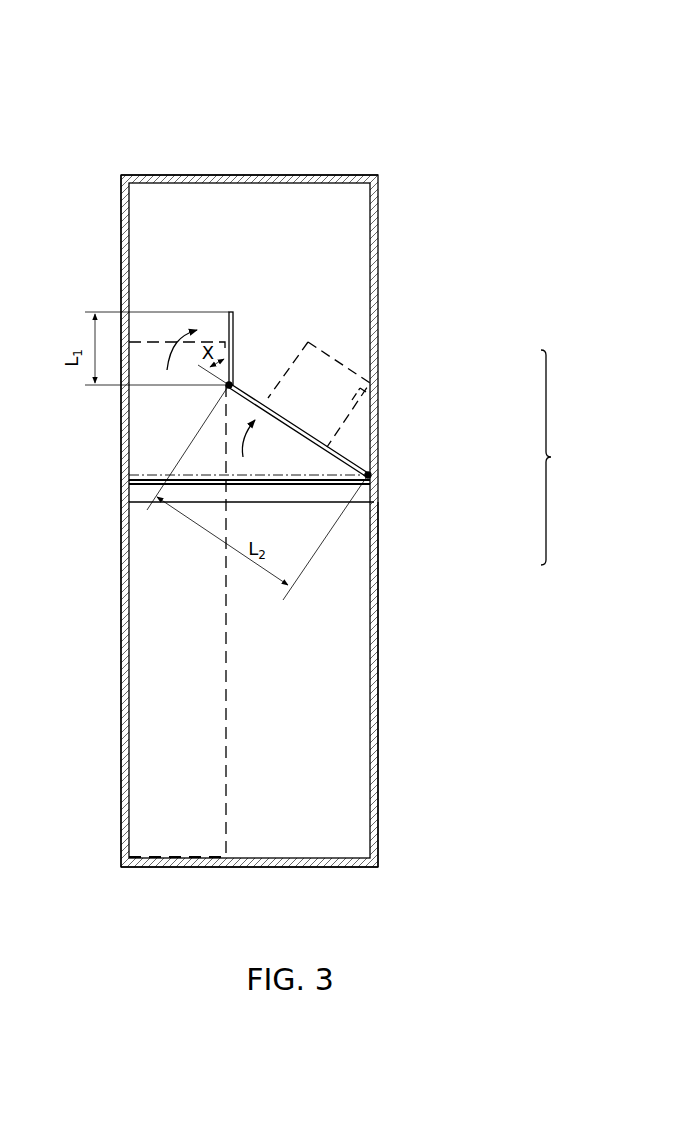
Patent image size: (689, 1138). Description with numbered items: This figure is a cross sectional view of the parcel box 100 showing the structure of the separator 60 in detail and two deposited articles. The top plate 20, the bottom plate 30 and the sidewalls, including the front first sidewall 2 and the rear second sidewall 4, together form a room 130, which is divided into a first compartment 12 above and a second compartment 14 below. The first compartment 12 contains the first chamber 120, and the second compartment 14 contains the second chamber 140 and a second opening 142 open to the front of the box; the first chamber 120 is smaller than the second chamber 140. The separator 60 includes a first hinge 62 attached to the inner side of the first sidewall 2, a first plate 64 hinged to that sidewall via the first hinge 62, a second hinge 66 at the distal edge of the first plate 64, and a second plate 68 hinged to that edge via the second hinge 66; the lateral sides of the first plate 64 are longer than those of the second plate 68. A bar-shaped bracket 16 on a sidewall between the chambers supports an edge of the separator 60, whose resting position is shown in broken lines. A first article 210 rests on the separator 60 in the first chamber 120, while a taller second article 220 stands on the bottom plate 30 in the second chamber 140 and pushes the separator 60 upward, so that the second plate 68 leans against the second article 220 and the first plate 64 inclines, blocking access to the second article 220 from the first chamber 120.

The parcel box 100 is at (100, 122).
The second sidewall 4 is at (121, 286).
The top plate 20 is at (233, 175).
The first compartment 12 is at (125, 243).
The second compartment 14 is at (125, 626).
The second opening 142 is at (375, 773).
The bottom plate 30 is at (285, 860).
The second plate 68 is at (233, 332).
The first plate 64 is at (340, 455).
The second hinge 66 is at (229, 385).
The first hinge 62 is at (371, 473).
The bracket 16 is at (140, 490).
The first sidewall 2 is at (374, 503).
The first article 210 is at (372, 405).
The separator 60 is at (247, 350).
The first chamber 120 is at (325, 326).
The second chamber 140 is at (337, 597).
The room 130 is at (570, 457).
The second article 220 is at (155, 715).